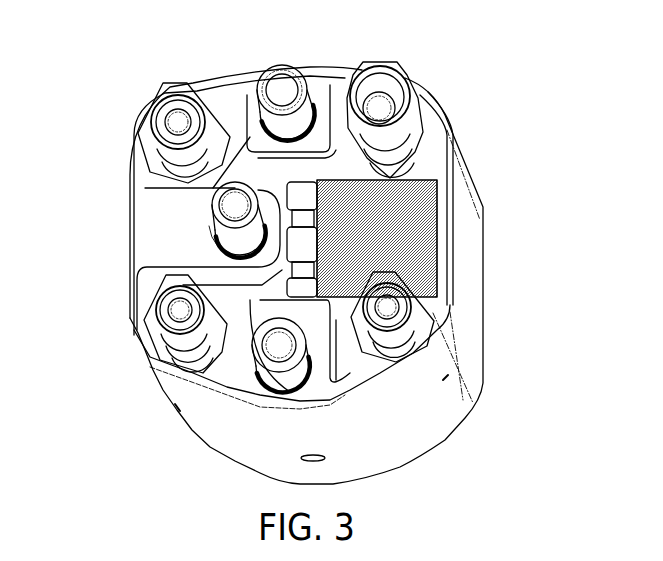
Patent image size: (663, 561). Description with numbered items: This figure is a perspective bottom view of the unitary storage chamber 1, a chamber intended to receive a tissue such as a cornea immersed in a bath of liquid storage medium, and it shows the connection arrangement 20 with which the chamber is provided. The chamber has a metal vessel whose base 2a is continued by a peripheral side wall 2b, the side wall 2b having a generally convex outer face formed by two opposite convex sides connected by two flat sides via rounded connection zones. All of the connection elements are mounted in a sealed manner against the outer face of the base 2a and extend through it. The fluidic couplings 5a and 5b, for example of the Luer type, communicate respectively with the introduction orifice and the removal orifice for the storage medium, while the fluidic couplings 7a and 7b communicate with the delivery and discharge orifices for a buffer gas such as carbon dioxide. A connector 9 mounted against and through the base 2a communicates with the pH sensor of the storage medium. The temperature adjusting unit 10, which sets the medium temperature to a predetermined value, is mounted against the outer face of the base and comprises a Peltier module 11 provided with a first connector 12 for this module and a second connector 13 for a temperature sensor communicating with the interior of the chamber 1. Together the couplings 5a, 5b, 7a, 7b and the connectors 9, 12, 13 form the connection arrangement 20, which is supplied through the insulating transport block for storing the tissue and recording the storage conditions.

The storage chamber 1 is at (113, 327).
The base 2a is at (231, 118).
The peripheral side wall 2b is at (276, 448).
The fluidic coupling 5a is at (168, 352).
The fluidic coupling 5b is at (424, 311).
The fluidic coupling 7a is at (153, 98).
The fluidic coupling 7b is at (411, 80).
The connector 9 is at (287, 68).
The temperature adjusting unit 10 is at (195, 210).
The Peltier module 11 is at (419, 233).
The first connector 12 is at (205, 223).
The second connector 13 is at (254, 374).
The connection arrangement 20 is at (121, 153).